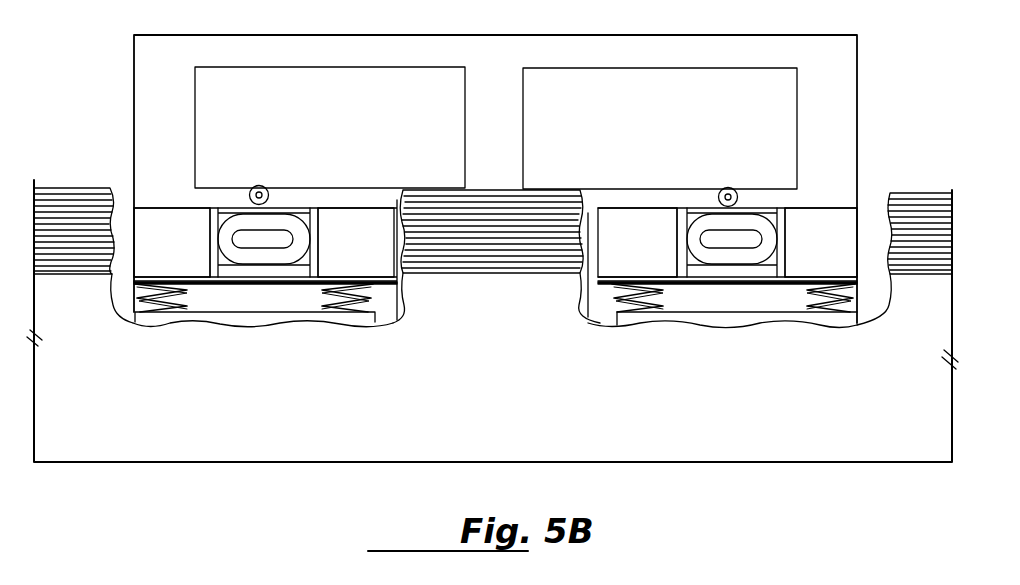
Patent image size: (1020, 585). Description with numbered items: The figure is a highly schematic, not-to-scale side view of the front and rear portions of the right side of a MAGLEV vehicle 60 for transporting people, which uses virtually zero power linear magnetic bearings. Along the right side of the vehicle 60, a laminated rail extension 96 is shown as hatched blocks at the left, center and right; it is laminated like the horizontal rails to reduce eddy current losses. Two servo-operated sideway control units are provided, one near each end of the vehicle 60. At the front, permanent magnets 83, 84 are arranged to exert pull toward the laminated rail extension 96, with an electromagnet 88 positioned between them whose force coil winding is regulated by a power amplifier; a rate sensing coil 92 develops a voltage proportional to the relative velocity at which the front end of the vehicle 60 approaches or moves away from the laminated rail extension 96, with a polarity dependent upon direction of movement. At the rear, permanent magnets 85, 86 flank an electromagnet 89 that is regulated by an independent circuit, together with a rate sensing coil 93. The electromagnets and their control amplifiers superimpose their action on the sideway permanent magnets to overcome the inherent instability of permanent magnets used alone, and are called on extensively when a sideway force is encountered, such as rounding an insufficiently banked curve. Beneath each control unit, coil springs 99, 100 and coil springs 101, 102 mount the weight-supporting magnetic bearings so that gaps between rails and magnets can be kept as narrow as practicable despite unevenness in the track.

The vehicle 60 is at (858, 127).
The permanent magnet 83 is at (172, 206).
The permanent magnet 84 is at (368, 207).
The permanent magnet 85 is at (640, 209).
The permanent magnet 86 is at (823, 209).
The electromagnet 88 is at (283, 213).
The electromagnet 89 is at (760, 214).
The sensing coil 92 is at (257, 181).
The sensing coil 93 is at (725, 189).
The laminated rail extension 96 is at (75, 187).
The coil spring 99 is at (188, 293).
The coil spring 100 is at (320, 297).
The coil spring 101 is at (667, 295).
The coil spring 102 is at (808, 304).